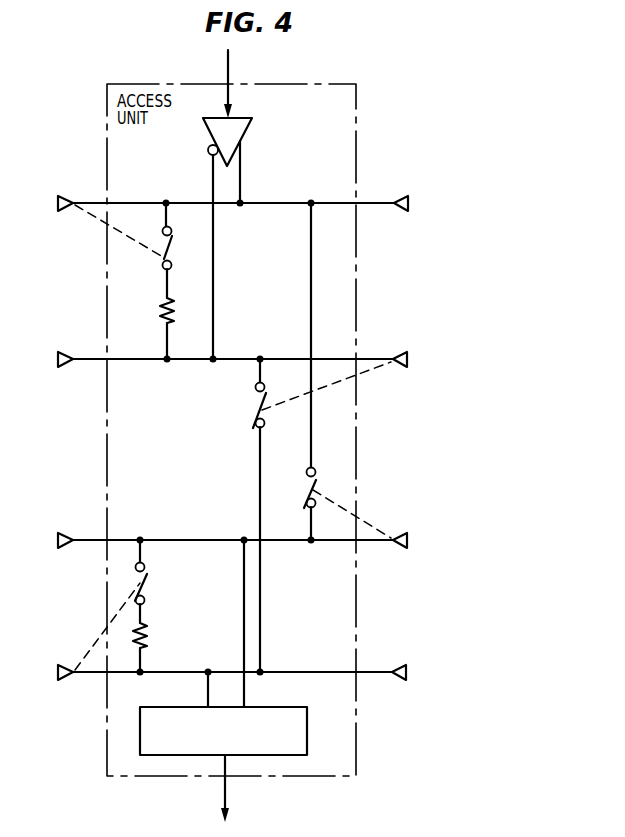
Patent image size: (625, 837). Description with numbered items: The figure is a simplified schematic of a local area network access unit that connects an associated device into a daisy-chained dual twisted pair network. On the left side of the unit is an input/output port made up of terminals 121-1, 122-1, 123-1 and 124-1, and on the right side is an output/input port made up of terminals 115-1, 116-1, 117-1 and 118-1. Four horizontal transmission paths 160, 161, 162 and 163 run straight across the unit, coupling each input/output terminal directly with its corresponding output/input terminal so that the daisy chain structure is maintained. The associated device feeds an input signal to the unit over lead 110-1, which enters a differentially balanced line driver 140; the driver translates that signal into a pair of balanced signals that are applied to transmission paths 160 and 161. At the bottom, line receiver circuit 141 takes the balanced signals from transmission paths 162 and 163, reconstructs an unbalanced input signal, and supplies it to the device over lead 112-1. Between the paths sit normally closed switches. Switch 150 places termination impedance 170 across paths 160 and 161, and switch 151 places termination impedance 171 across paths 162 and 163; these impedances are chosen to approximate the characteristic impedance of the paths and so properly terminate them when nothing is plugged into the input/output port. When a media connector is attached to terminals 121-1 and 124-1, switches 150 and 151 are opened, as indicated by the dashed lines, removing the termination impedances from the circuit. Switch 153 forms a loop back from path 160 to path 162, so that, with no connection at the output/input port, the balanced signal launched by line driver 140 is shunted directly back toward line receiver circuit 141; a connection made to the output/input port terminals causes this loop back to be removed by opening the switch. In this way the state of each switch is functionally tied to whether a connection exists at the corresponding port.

The lead 110-1 is at (229, 60).
The lead 112-1 is at (227, 797).
The terminal 115-1 is at (378, 202).
The terminal 116-1 is at (378, 358).
The terminal 117-1 is at (376, 543).
The terminal 118-1 is at (372, 675).
The terminal 121-1 is at (90, 202).
The terminal 122-1 is at (86, 358).
The terminal 123-1 is at (88, 539).
The terminal 124-1 is at (83, 675).
The line driver 140 is at (252, 128).
The line receiver circuit 141 is at (307, 745).
The switch 150 is at (172, 246).
The switch 151 is at (150, 581).
The switch 153 is at (306, 494).
The transmission path 160 is at (268, 203).
The transmission path 161 is at (240, 358).
The transmission path 162 is at (163, 539).
The transmission path 163 is at (294, 671).
The termination impedance 170 is at (160, 314).
The termination impedance 171 is at (148, 633).